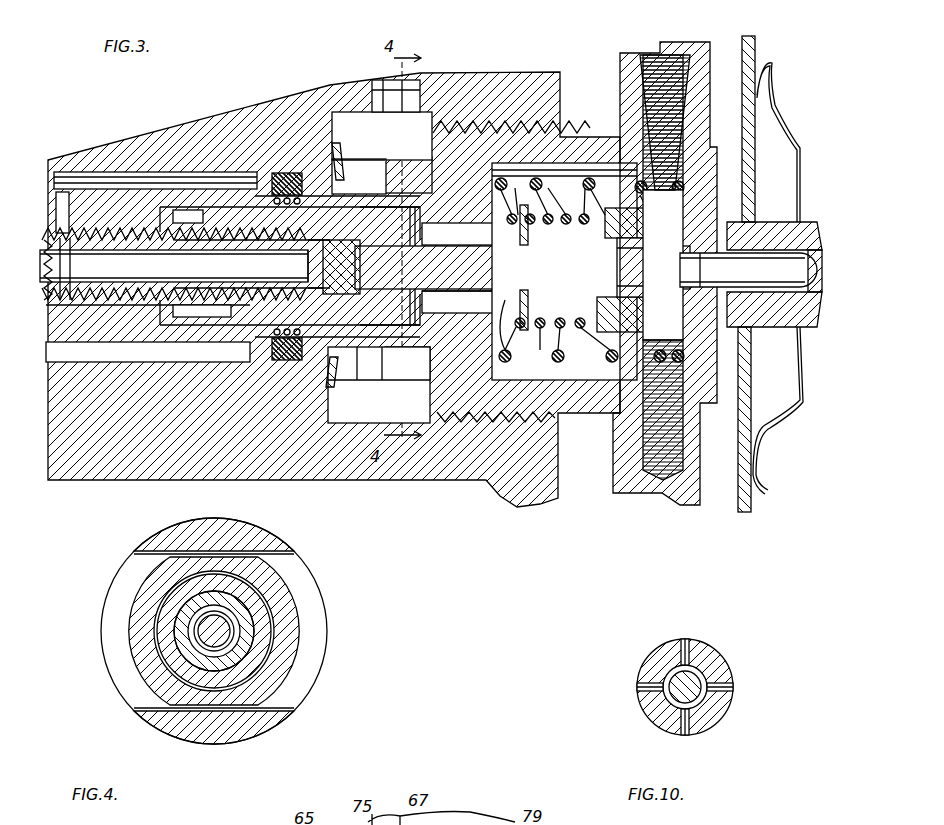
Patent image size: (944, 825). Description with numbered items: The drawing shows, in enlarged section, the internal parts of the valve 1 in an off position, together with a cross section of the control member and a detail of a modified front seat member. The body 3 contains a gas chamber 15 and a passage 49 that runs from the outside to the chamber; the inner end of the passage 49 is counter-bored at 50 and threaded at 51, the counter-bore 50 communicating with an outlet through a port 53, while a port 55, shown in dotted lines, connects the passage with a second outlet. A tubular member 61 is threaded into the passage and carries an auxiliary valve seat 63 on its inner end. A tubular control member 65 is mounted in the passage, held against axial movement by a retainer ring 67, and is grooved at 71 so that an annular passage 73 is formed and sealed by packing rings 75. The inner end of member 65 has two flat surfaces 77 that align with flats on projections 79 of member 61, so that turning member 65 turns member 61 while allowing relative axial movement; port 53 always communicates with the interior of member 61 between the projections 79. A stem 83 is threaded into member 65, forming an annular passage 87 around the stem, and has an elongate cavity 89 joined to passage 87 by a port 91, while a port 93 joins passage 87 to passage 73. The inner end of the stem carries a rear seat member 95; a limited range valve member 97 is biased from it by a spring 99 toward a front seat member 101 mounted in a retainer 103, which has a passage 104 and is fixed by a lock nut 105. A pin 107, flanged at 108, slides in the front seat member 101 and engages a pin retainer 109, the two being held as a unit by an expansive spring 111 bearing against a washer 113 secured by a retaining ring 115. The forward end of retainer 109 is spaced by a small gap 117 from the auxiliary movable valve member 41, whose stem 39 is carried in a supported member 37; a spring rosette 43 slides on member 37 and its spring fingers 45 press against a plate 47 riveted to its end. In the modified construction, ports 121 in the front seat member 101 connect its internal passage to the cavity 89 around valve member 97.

In FIG. 3, the valve 1 is at (134, 496).
In FIG. 3, the body 3 is at (463, 488).
In FIG. 3, the gas chamber 15 is at (572, 478).
In FIG. 3, the supported member 37 is at (812, 222).
In FIG. 3, the stem 39 is at (772, 252).
In FIG. 3, the auxiliary movable valve member 41 is at (690, 493).
In FIG. 3, the spring rosette 43 is at (773, 485).
In FIG. 3, the spring fingers 45 is at (790, 410).
In FIG. 3, the plate 47 is at (744, 512).
In FIG. 3, the passage 49 is at (68, 366).
In FIG. 3, the counter-bore 50 is at (348, 440).
In FIG. 3, the threads 51 is at (518, 420).
In FIG. 3, the port 53 is at (376, 84).
In FIG. 3, the port 55 is at (264, 118).
In FIG. 3, the tubular member 61 is at (565, 132).
In FIG. 3, the auxiliary valve seat 63 is at (662, 58).
In FIG. 3, the tubular control member 65 is at (134, 338).
In FIG. 4, the tubular control member 65 is at (128, 644).
In FIG. 3, the retainer ring 67 is at (350, 152).
In FIG. 3, the groove 71 is at (178, 200).
In FIG. 3, the annular passage 73 is at (150, 170).
In FIG. 3, the packing rings 75 is at (292, 170).
In FIG. 4, the flat surfaces 77 is at (258, 690).
In FIG. 3, the projections 79 is at (386, 380).
In FIG. 4, the projections 79 is at (216, 728).
In FIG. 3, the stem 83 is at (128, 300).
In FIG. 3, the annular passage 87 is at (174, 279).
In FIG. 3, the elongate cavity 89 is at (158, 262).
In FIG. 3, the port 91 is at (65, 269).
In FIG. 3, the port 93 is at (72, 190).
In FIG. 3, the limited range valve seat member 95 is at (297, 266).
In FIG. 3, the limited range valve member 97 is at (330, 300).
In FIG. 3, the spring 99 is at (272, 300).
In FIG. 3, the front seat member 101 is at (378, 340).
In FIG. 4, the front seat member 101 is at (252, 612).
In FIG. 10, the front seat member 101 is at (722, 660).
In FIG. 3, the retainer 103 is at (240, 300).
In FIG. 4, the retainer 103 is at (262, 646).
In FIG. 3, the passage 104 is at (430, 294).
In FIG. 3, the lock nut 105 is at (194, 300).
In FIG. 3, the pin 107 is at (522, 266).
In FIG. 4, the pin 107 is at (232, 631).
In FIG. 10, the pin 107 is at (672, 696).
In FIG. 3, the flange 108 is at (633, 210).
In FIG. 3, the pin retainer 109 is at (620, 340).
In FIG. 3, the expansive spring 111 is at (589, 201).
In FIG. 3, the washer 113 is at (564, 271).
In FIG. 3, the retaining ring 115 is at (558, 331).
In FIG. 3, the spacing 117 is at (650, 358).
In FIG. 10, the ports 121 is at (655, 676).